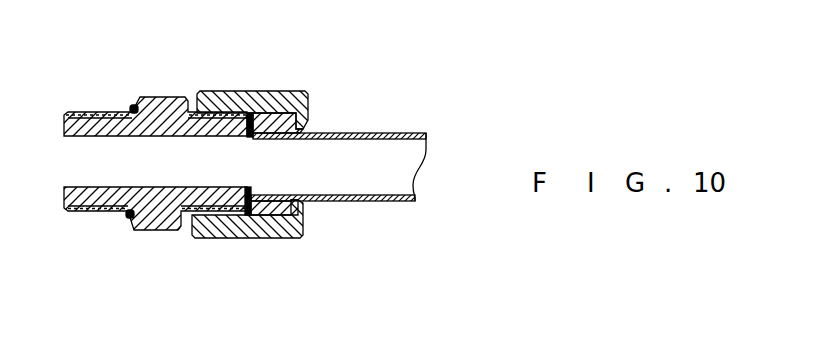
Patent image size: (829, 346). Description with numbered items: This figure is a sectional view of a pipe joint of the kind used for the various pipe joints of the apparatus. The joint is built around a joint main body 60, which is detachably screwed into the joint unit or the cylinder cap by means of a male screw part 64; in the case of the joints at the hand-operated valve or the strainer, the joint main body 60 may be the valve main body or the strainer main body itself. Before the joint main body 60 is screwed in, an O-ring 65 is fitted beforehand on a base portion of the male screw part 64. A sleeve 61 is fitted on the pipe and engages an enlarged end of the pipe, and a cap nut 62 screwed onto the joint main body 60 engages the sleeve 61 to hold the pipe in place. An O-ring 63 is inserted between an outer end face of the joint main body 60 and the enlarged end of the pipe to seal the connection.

The joint main body 60 is at (153, 96).
The sleeve 61 is at (312, 130).
The cap nut 62 is at (282, 91).
The O-ring 63 is at (245, 238).
The male screw part 64 is at (93, 208).
The O-ring 65 is at (128, 218).